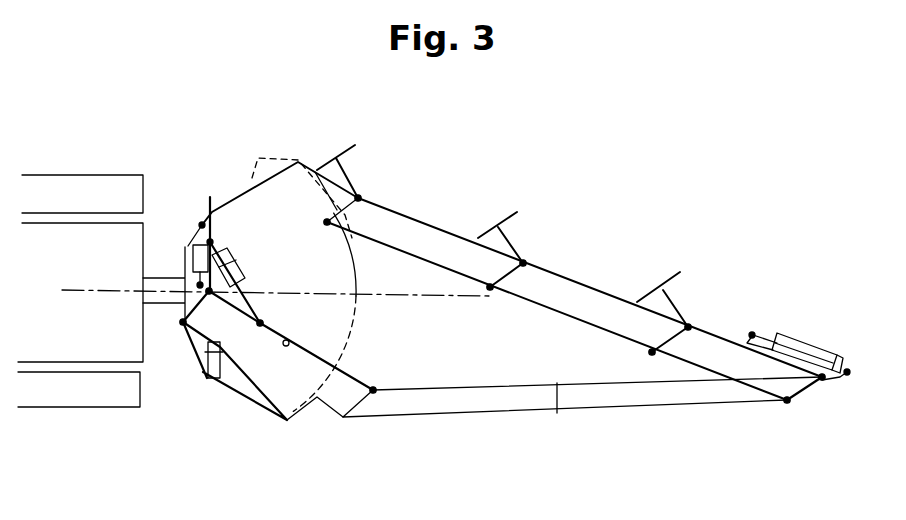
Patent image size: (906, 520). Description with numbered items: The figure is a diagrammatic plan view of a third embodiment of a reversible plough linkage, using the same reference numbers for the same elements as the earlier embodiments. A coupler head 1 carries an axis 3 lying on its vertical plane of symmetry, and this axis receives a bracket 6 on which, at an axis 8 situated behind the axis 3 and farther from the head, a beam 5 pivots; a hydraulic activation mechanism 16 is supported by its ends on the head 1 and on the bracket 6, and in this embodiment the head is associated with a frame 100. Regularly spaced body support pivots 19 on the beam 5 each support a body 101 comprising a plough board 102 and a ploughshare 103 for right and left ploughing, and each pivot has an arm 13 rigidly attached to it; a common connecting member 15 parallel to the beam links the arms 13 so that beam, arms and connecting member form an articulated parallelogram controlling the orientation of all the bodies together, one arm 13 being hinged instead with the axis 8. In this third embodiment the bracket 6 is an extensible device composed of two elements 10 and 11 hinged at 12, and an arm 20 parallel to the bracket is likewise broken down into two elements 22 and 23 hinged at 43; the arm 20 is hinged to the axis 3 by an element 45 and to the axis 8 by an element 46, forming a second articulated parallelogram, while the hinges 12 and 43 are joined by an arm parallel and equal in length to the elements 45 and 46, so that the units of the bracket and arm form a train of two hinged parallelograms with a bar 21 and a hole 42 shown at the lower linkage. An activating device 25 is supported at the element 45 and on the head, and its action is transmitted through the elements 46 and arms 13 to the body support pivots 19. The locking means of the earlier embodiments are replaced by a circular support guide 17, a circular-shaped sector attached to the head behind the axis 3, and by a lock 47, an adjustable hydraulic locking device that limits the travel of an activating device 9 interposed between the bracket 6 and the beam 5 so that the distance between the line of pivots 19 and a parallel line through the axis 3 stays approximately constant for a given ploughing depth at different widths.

The coupler head 1 is at (193, 348).
The axis 3 is at (174, 307).
The beam 5 is at (552, 271).
The bracket 6 is at (362, 385).
The axis 8 is at (823, 380).
The activating device 9 is at (795, 326).
The element 10 is at (348, 378).
The element 11 is at (557, 413).
The hinge 12 is at (375, 389).
The arm 13 is at (680, 332).
The connecting member 15 is at (593, 323).
The hydraulic activation mechanism 16 is at (231, 262).
The circular support guide 17 is at (356, 268).
The body support pivot 19 is at (360, 198).
The arm 20 is at (302, 400).
The bar 21 is at (218, 380).
The element 22 is at (258, 378).
The element 23 is at (660, 407).
The activating device 25 is at (188, 246).
The pivot hole 42 is at (286, 346).
The hinge 43 is at (362, 404).
The element 45 is at (209, 345).
The element 46 is at (820, 378).
The lock 47 is at (802, 348).
The vehicle frame 100 is at (85, 245).
The body 101 is at (346, 168).
The plough board 102 is at (310, 171).
The ploughshare 103 is at (315, 172).